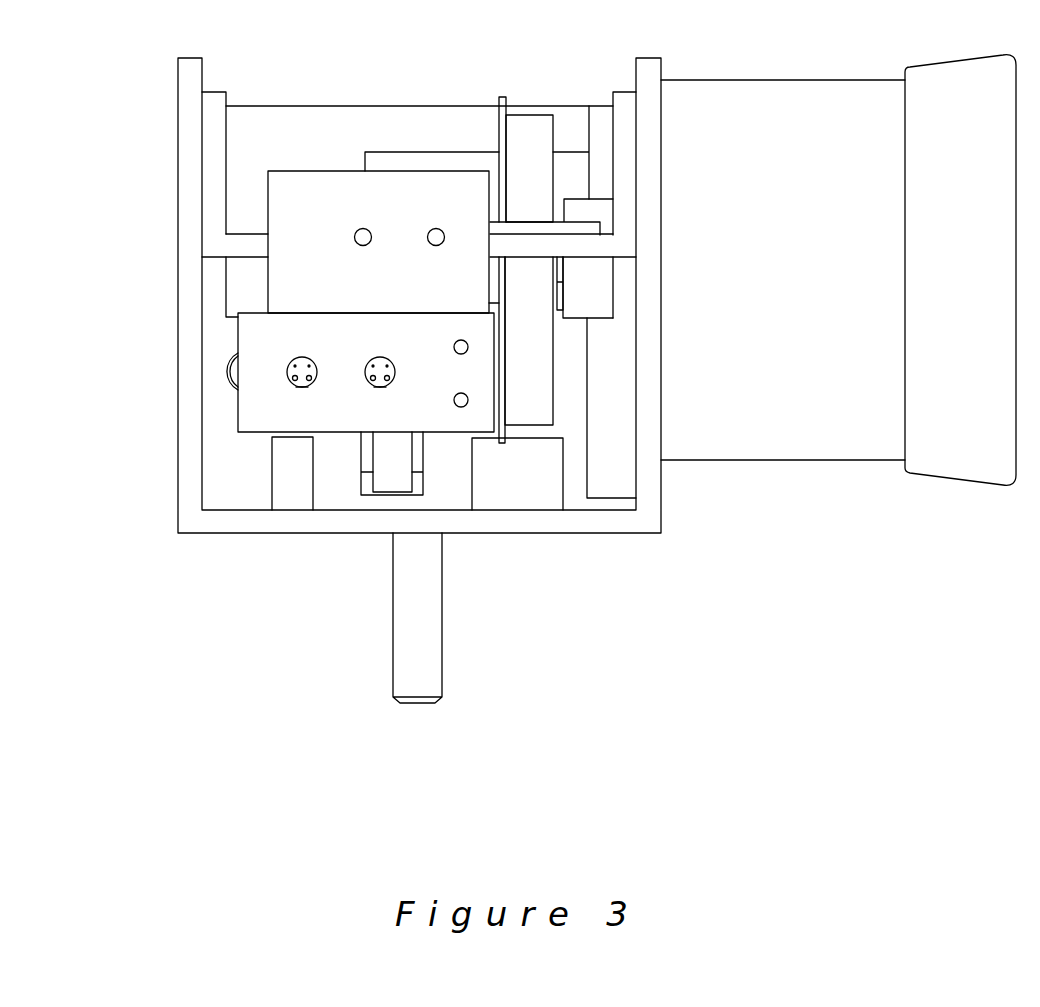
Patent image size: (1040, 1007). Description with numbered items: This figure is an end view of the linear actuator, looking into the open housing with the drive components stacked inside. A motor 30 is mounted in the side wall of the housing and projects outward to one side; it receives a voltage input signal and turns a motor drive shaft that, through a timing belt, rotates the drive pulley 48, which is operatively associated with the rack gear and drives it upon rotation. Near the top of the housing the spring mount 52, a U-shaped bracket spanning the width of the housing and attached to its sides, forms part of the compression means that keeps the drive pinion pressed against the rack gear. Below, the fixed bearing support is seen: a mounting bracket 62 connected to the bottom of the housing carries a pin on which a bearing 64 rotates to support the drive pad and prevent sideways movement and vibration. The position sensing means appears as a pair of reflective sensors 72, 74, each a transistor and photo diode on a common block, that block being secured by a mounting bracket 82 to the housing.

The motor 30 is at (772, 459).
The drive pulley 48 is at (525, 386).
The spring mount 52 is at (215, 170).
The mounting bracket 62 is at (366, 483).
The bearing 64 is at (383, 471).
The reflective sensor 72 is at (295, 388).
The reflective sensor 74 is at (368, 387).
The mounting bracket 82 is at (324, 258).